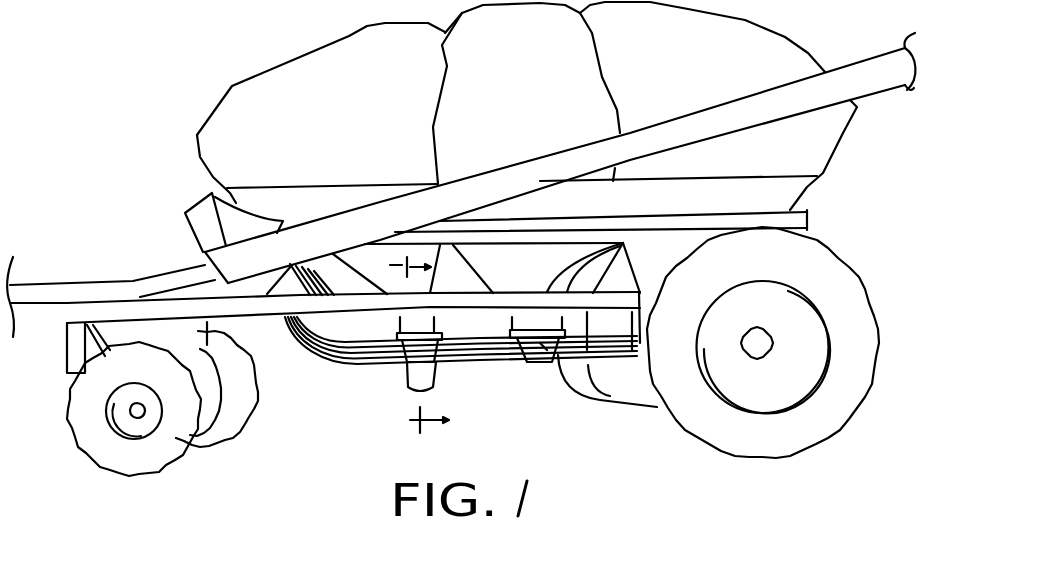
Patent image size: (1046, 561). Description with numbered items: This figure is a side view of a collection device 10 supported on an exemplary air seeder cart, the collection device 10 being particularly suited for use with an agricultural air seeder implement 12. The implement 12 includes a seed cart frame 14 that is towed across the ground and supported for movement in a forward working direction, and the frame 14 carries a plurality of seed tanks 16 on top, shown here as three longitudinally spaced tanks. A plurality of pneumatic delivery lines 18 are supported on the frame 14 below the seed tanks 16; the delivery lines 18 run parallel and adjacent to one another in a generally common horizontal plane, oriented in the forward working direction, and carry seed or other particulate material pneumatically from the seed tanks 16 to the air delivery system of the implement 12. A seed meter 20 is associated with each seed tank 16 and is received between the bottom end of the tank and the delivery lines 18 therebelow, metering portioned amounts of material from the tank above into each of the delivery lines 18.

The collection device 10 is at (400, 376).
The agricultural air seeder implement 12 is at (108, 115).
The seed cart frame 14 is at (160, 318).
The seed tanks 16 is at (345, 118).
The pneumatic delivery lines 18 is at (492, 348).
The seed meter 20 is at (423, 348).